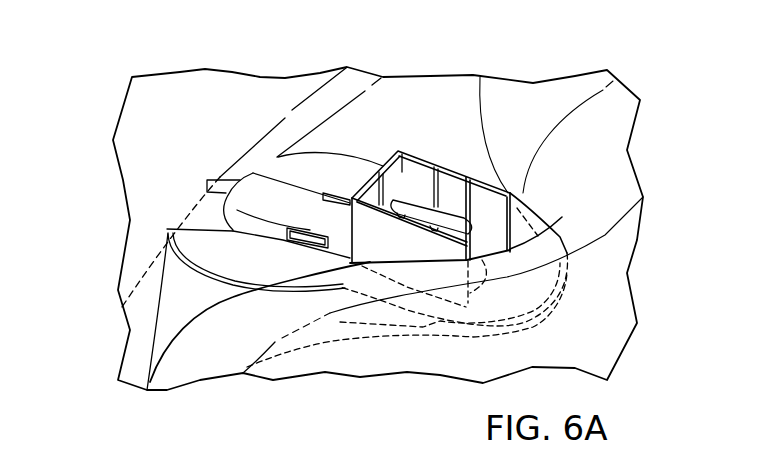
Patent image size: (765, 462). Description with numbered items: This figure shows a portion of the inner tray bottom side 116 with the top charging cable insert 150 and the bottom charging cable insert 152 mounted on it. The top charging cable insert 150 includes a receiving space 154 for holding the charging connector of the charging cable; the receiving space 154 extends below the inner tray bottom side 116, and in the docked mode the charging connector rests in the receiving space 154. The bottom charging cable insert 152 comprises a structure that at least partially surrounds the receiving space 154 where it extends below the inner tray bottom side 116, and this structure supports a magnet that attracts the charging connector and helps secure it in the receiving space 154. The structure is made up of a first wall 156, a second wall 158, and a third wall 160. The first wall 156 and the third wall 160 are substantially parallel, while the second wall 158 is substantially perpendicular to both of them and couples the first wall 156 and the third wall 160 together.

The inner tray bottom side 116 is at (228, 90).
The top charging cable insert 150 is at (266, 190).
The bottom charging cable insert 152 is at (180, 233).
The receiving space 154 is at (440, 218).
The first wall 156 is at (390, 238).
The second wall 158 is at (402, 150).
The third wall 160 is at (495, 215).